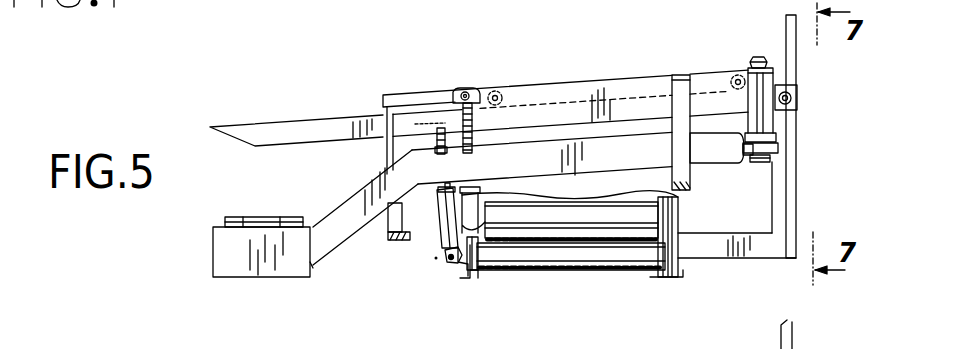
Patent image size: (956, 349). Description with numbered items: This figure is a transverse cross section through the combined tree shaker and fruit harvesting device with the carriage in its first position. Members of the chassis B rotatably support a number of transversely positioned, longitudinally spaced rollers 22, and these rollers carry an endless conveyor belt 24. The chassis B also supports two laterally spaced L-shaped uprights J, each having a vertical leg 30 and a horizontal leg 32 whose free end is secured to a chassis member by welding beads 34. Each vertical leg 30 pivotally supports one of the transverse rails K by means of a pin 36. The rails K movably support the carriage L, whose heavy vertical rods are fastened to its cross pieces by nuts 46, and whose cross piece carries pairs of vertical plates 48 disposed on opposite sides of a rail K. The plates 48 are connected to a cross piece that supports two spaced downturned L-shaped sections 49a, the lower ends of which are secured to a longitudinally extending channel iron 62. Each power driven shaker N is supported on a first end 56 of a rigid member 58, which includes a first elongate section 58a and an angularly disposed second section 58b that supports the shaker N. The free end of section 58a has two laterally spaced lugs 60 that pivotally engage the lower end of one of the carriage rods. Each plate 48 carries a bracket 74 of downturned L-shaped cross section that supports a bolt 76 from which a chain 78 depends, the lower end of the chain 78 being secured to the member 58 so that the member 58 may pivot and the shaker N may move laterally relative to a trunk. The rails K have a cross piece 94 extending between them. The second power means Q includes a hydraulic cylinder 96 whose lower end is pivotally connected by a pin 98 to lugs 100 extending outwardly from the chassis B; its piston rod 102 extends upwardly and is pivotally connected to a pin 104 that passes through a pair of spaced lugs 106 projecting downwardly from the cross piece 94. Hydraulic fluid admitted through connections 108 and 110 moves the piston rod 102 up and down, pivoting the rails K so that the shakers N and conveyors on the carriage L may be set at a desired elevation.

The rollers 22 is at (562, 255).
The endless conveyor belt 24 is at (562, 242).
The vertical leg 30 is at (797, 187).
The horizontal leg 32 is at (728, 257).
The welding beads 34 is at (683, 262).
The pin 36 is at (797, 100).
The nuts 46 is at (750, 64).
The vertical plates 48 is at (600, 93).
The downturned L-shaped sections 49a is at (382, 152).
The first end 56 is at (315, 266).
The rigid member 58 is at (545, 172).
The first elongate section 58a is at (650, 168).
The second section 58b is at (370, 227).
The lugs 60 is at (777, 138).
The channel iron 62 is at (395, 240).
The bracket 74 is at (490, 90).
The bolt 76 is at (466, 90).
The chain 78 is at (476, 133).
The cross piece 94 is at (418, 126).
The hydraulic cylinder 96 is at (447, 258).
The pin 98 is at (449, 264).
The lugs 100 is at (468, 266).
The piston rod 102 is at (440, 151).
The pin 104 is at (441, 128).
The lugs 106 is at (458, 130).
The connection 108 is at (437, 203).
The connection 110 is at (446, 242).
The transverse rails K is at (287, 122).
The carriage L is at (561, 85).
The L-shaped uprights J is at (797, 150).
The power driven shakers N is at (242, 257).
The second power means Q is at (455, 211).
The chassis B is at (460, 278).